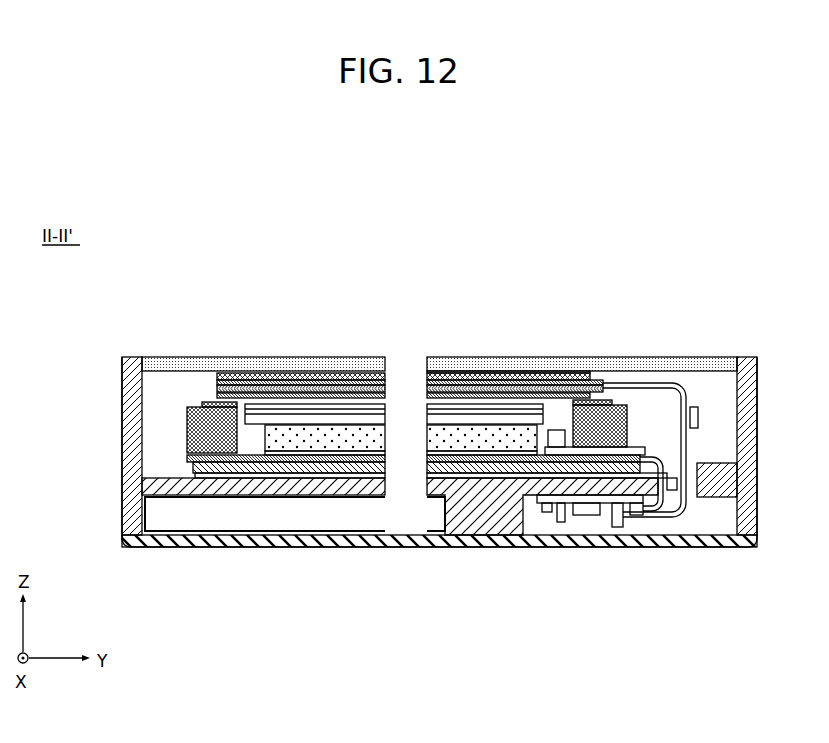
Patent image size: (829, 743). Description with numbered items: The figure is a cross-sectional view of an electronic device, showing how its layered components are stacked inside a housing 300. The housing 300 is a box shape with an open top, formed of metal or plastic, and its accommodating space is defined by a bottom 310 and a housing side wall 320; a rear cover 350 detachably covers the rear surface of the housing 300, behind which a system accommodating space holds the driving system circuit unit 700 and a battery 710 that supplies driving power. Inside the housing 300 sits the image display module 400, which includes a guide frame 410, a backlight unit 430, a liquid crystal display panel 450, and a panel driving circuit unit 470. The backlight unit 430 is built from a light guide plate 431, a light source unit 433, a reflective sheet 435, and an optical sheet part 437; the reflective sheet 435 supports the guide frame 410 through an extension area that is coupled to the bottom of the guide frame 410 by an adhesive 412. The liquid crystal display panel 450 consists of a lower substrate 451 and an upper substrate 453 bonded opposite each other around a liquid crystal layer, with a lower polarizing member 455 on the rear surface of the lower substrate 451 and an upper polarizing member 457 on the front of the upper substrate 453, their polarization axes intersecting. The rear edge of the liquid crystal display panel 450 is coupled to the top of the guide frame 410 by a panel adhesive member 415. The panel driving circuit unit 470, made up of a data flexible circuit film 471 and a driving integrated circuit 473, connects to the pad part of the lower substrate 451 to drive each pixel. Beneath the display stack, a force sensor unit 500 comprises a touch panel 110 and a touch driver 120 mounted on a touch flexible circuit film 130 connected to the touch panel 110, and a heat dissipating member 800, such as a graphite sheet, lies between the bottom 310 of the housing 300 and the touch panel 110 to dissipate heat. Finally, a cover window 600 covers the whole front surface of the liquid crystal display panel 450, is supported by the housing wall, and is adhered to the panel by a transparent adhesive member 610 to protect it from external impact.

The touch panel 110 is at (598, 475).
The touch driver 120 is at (676, 505).
The touch flexible circuit film 130 is at (672, 490).
The housing 300 is at (230, 622).
The bottom 310 is at (230, 468).
The housing side wall 320 is at (163, 465).
The rear cover 350 is at (130, 535).
The image display module 400 is at (698, 240).
The guide frame 410 is at (188, 405).
The adhesive 412 is at (187, 460).
The panel adhesive member 415 is at (207, 402).
The backlight unit 430 is at (563, 287).
The light guide plate 431 is at (480, 440).
The light source unit 433 is at (555, 430).
The reflective sheet 435 is at (500, 453).
The optical sheet part 437 is at (447, 417).
The liquid crystal display panel 450 is at (373, 287).
The lower substrate 451 is at (330, 385).
The upper substrate 453 is at (296, 380).
The lower polarizing member 455 is at (367, 393).
The upper polarizing member 457 is at (262, 373).
The panel driving circuit unit 470 is at (723, 287).
The data flexible circuit film 471 is at (667, 385).
The driving integrated circuit 473 is at (694, 407).
The force sensor unit 500 is at (710, 619).
The cover window 600 is at (145, 357).
The transparent adhesive member 610 is at (430, 374).
The driving system circuit unit 700 is at (580, 523).
The battery 710 is at (290, 520).
The heat dissipating member 800 is at (347, 478).